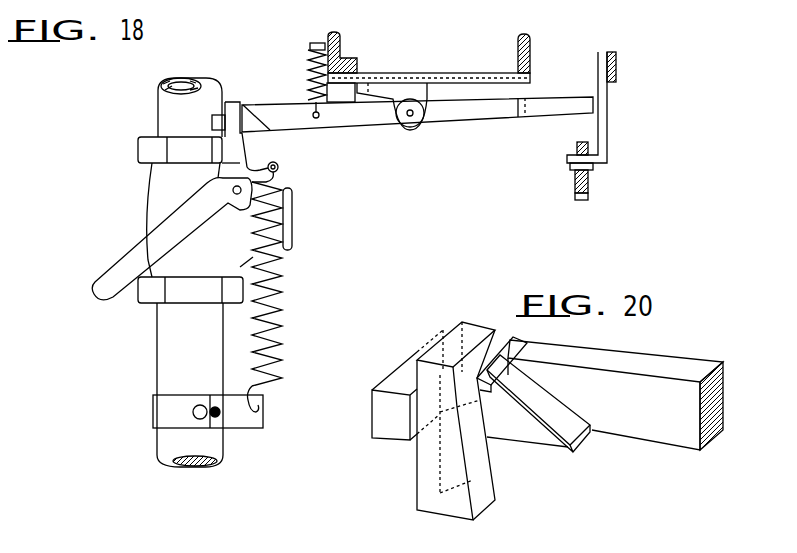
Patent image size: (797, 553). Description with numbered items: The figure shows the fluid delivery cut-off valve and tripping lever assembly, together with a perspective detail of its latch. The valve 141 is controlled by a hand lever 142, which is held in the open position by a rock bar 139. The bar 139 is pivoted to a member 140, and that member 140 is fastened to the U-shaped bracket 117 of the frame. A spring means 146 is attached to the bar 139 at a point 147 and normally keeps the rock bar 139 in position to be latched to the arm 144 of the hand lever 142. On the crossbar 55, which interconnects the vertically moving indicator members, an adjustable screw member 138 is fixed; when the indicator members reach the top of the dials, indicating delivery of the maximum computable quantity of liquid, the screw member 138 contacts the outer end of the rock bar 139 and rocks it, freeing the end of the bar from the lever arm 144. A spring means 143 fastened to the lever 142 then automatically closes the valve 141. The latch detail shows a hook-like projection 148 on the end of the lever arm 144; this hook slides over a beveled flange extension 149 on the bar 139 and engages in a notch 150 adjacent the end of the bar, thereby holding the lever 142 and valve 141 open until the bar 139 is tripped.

In FIG. 18, the crossbar 55 is at (616, 70).
In FIG. 18, the U-shaped bracket 117 is at (340, 60).
In FIG. 18, the adjustable screw member 138 is at (603, 126).
In FIG. 18, the rock bar 139 is at (566, 100).
In FIG. 20, the rock bar 139 is at (672, 432).
In FIG. 18, the member supporting the rock bar 140 is at (430, 82).
In FIG. 18, the fluid delivery cut-off valve 141 is at (158, 208).
In FIG. 18, the hand lever 142 is at (140, 250).
In FIG. 18, the spring means 143 is at (272, 324).
In FIG. 18, the arm of the hand lever 144 is at (212, 124).
In FIG. 20, the arm of the hand lever 144 is at (422, 486).
In FIG. 18, the spring means 146 is at (310, 94).
In FIG. 18, the attachment point of spring means 147 is at (315, 120).
In FIG. 20, the hook-like projection 148 is at (447, 342).
In FIG. 20, the beveled flange extension 149 is at (542, 408).
In FIG. 20, the notch 150 is at (497, 347).